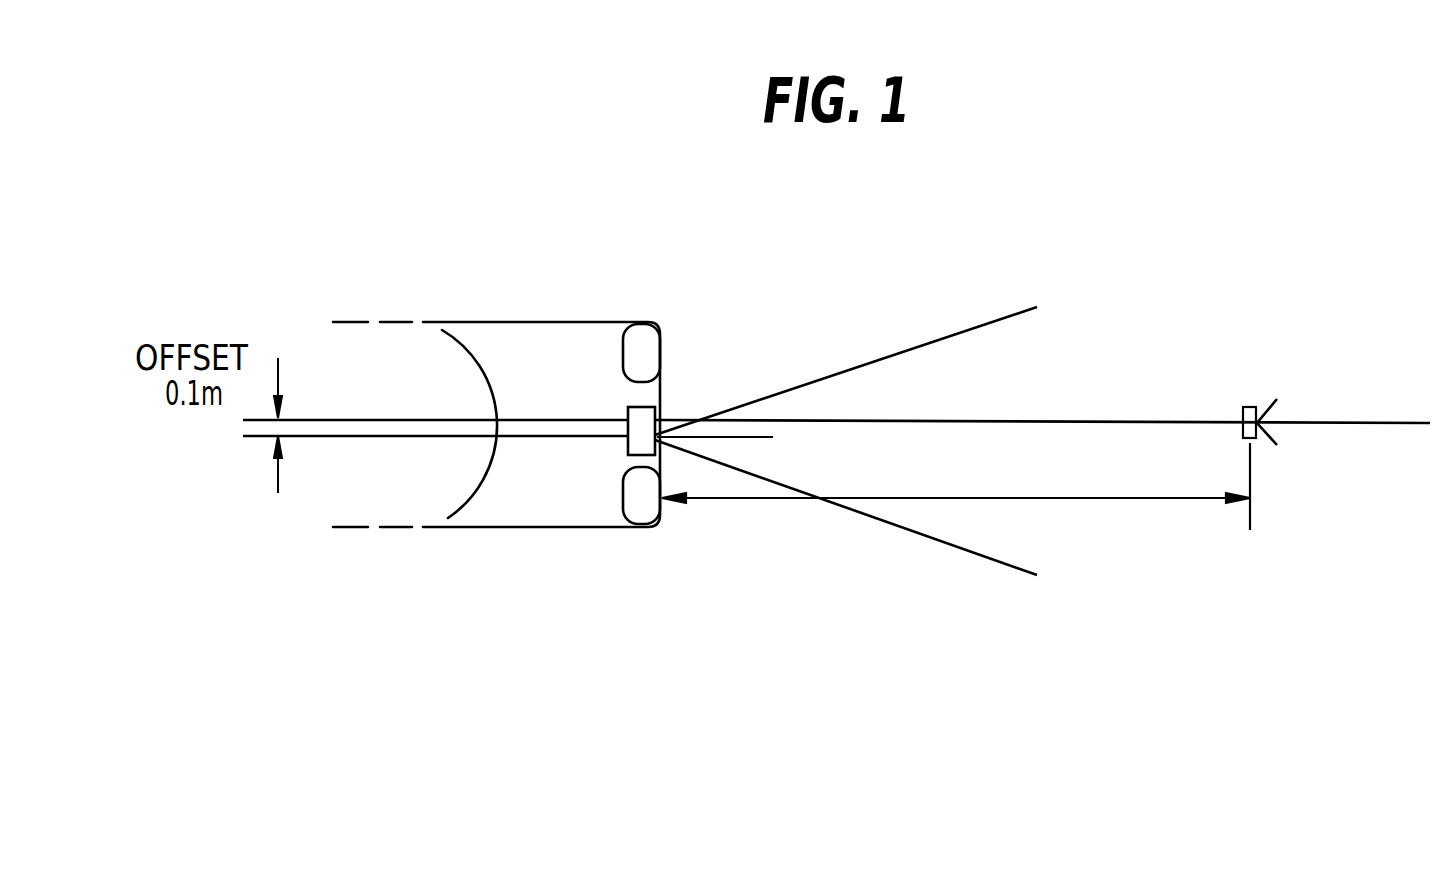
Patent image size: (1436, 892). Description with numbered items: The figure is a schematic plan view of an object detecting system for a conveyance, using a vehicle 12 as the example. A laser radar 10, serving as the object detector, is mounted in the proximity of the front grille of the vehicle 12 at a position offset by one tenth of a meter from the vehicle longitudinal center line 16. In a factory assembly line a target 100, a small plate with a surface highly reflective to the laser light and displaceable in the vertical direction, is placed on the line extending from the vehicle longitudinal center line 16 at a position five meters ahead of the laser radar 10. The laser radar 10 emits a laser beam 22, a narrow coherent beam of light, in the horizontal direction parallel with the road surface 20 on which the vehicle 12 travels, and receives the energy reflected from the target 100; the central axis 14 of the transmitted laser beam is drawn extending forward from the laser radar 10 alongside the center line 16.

The laser radar 10 is at (628, 452).
The vehicle 12 is at (520, 322).
The central axis of the laser beam 14 is at (750, 437).
The vehicle longitudinal center line 16 is at (1368, 423).
The road surface 20 is at (777, 563).
The laser beam 22 is at (922, 348).
The target 100 is at (1250, 407).